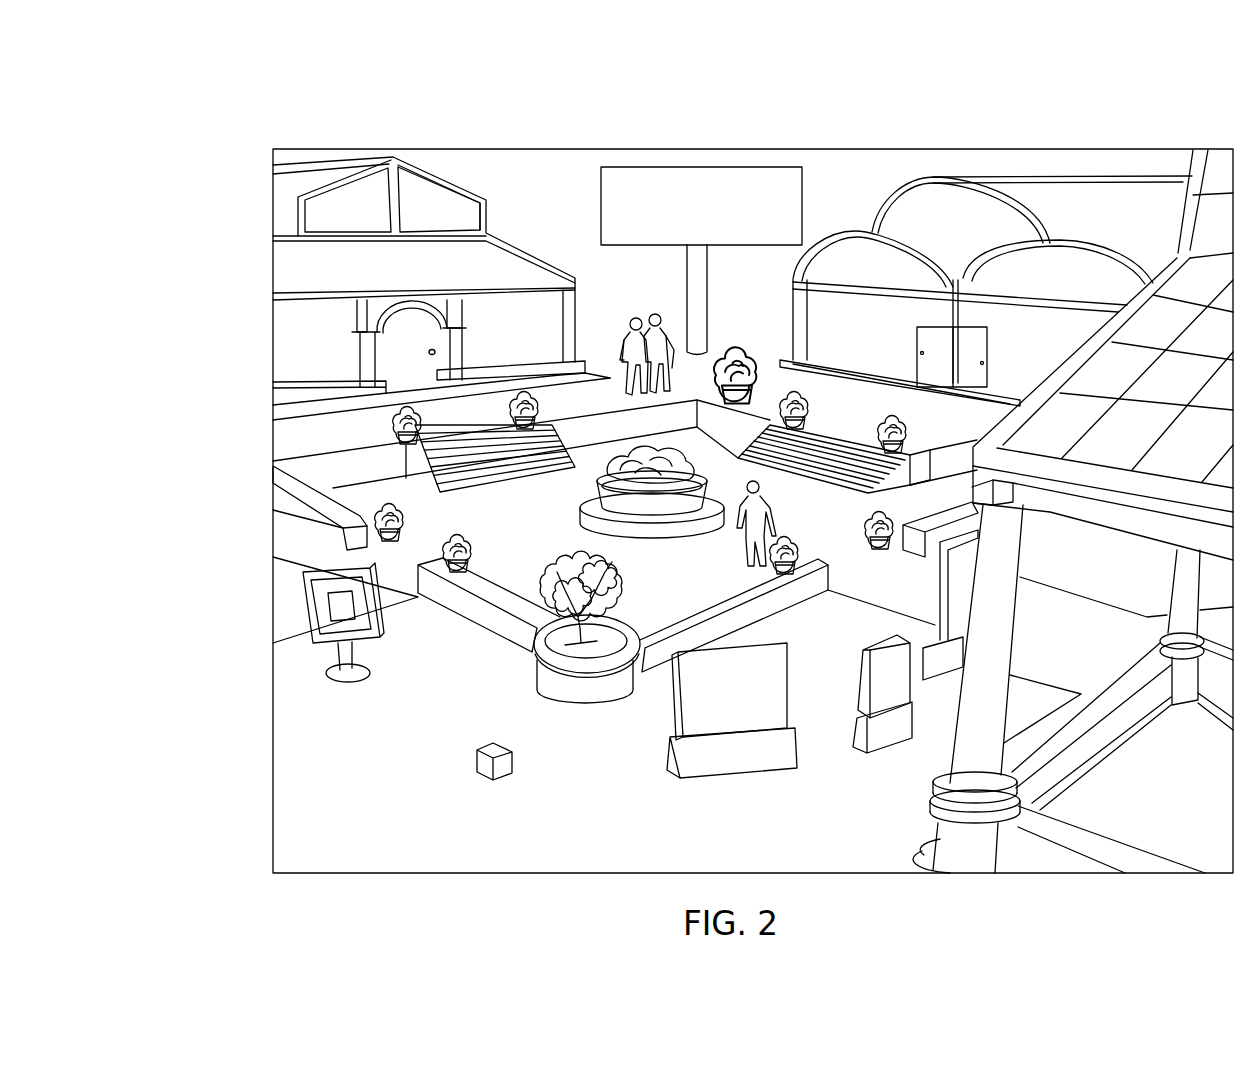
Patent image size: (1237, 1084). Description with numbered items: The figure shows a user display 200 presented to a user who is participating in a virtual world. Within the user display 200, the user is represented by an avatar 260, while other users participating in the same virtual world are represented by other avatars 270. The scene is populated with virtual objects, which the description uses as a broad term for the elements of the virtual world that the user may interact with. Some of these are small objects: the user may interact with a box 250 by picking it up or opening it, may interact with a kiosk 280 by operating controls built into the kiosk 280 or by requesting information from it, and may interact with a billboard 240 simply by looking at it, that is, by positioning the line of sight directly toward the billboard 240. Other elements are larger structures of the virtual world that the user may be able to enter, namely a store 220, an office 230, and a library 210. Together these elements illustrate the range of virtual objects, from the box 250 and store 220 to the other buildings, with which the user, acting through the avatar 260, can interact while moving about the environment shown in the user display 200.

The user display 200 is at (252, 124).
The library 210 is at (457, 186).
The store 220 is at (911, 232).
The office 230 is at (1075, 243).
The billboard 240 is at (803, 193).
The box 250 is at (447, 766).
The avatar 260 is at (765, 490).
The other avatars 270 is at (627, 318).
The kiosk 280 is at (388, 622).